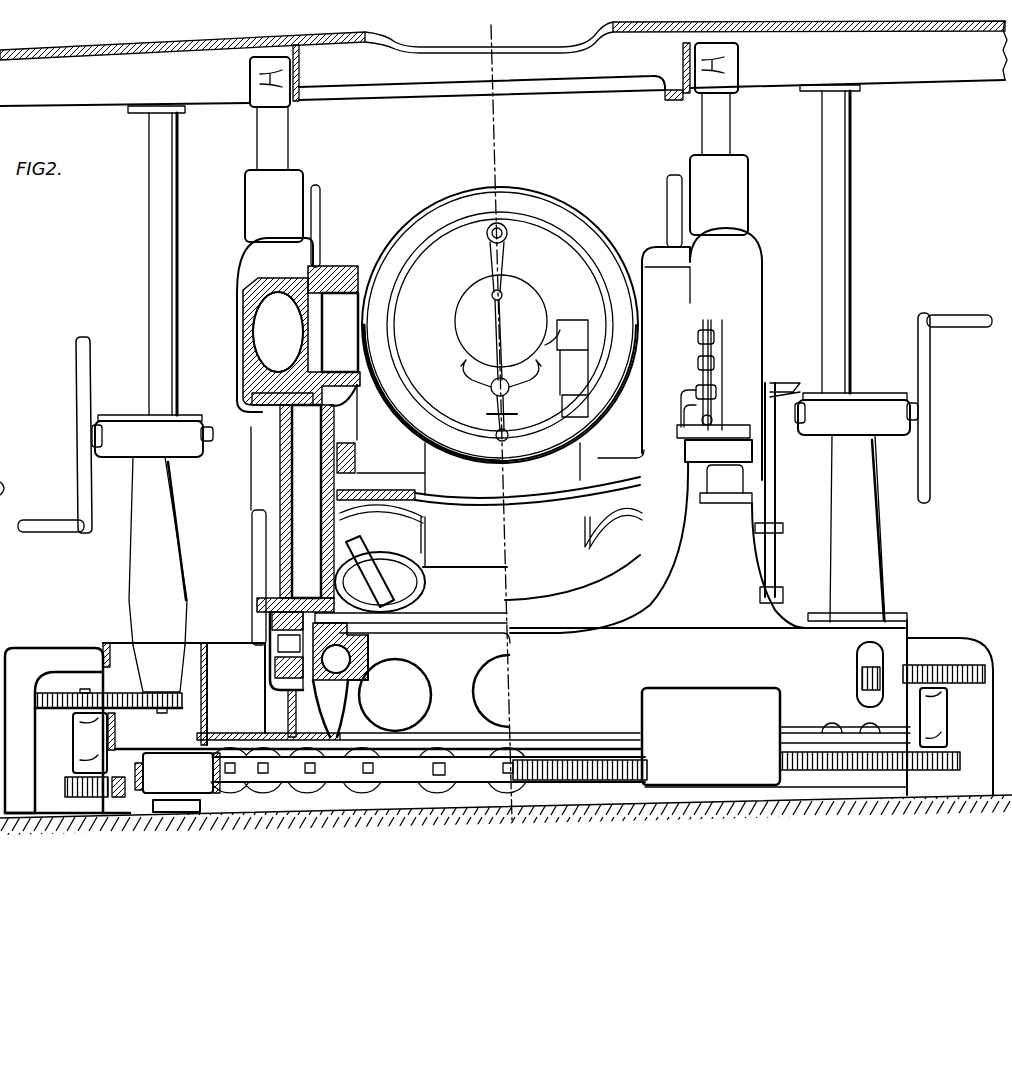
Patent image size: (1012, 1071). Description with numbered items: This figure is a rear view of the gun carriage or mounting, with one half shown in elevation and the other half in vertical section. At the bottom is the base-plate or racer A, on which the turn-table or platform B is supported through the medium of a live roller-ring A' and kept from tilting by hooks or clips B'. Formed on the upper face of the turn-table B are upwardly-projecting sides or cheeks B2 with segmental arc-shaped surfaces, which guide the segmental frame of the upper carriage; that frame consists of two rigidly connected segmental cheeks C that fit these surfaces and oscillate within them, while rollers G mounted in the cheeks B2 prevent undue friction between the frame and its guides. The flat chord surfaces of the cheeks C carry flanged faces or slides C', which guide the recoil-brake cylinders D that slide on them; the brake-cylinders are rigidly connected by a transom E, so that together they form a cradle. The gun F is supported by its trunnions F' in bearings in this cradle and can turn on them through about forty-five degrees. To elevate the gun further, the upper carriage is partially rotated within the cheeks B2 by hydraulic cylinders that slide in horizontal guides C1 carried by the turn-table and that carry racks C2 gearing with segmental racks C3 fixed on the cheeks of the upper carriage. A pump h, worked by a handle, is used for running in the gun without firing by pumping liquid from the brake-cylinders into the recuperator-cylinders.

The gun F is at (500, 325).
The cradle and recoil-brake cylinders D is at (252, 325).
The trunnions F' is at (333, 319).
The flanged faces or slides C' is at (299, 565).
The segmental cheeks of the upper carriage C is at (303, 539).
The transom E is at (487, 498).
The pump h is at (705, 403).
The sides or cheeks of the turn-table B2 is at (657, 508).
The rollers G is at (270, 669).
The racks C2 is at (368, 646).
The segmental racks C3 is at (350, 621).
The horizontal guides C1 is at (369, 670).
The turn-table or platform B is at (499, 716).
The hooks or clips B' is at (711, 736).
The live roller-ring A' is at (177, 773).
The base-plate or racer A is at (482, 794).